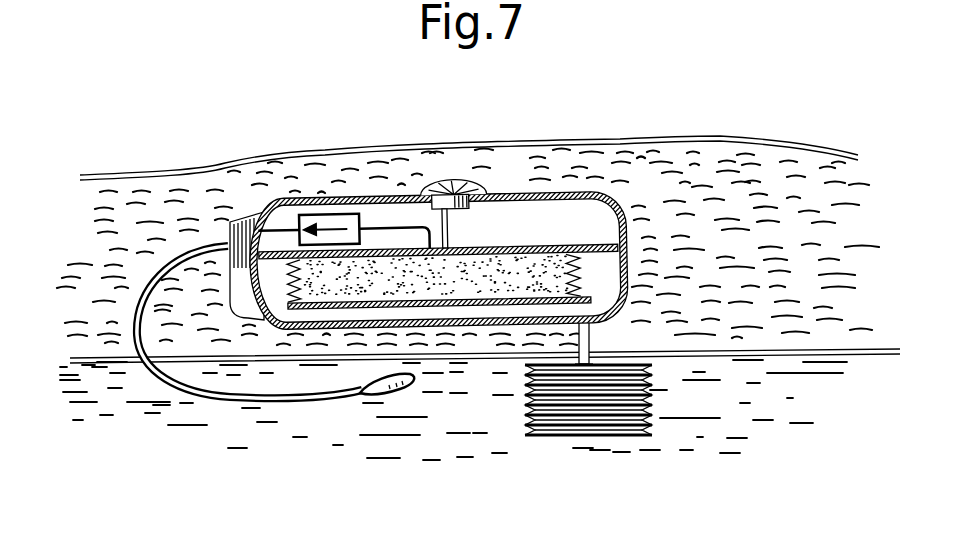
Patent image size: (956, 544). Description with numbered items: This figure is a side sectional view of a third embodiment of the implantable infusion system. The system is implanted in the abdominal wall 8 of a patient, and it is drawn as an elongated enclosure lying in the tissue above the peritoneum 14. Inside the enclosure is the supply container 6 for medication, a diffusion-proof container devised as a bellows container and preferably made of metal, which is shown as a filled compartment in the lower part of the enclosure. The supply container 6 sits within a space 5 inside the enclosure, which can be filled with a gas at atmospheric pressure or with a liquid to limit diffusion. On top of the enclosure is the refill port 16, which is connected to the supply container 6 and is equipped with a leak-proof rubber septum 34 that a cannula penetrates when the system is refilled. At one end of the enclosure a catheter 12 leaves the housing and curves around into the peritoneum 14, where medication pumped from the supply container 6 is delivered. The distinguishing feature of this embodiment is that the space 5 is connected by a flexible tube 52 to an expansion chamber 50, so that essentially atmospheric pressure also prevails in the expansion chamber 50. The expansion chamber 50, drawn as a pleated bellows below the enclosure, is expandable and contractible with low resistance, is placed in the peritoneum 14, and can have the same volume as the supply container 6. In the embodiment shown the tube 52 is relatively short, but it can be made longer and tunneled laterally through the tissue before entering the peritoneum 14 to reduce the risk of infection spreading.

The space 5 is at (352, 316).
The supply container 6 is at (484, 287).
The abdominal wall 8 is at (772, 188).
The catheter 12 is at (216, 392).
The peritoneum 14 is at (832, 407).
The refill port 16 is at (448, 269).
The septum 34 is at (456, 183).
The expansion chamber 50 is at (566, 402).
The flexible tube 52 is at (592, 334).